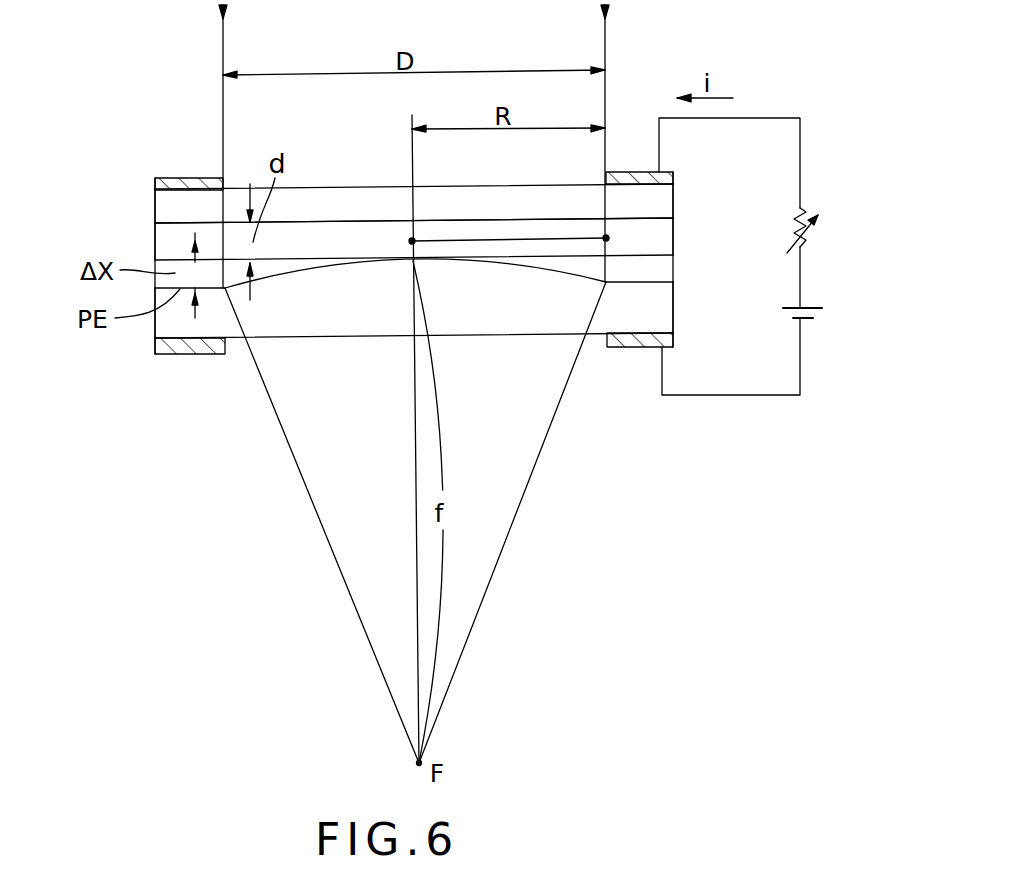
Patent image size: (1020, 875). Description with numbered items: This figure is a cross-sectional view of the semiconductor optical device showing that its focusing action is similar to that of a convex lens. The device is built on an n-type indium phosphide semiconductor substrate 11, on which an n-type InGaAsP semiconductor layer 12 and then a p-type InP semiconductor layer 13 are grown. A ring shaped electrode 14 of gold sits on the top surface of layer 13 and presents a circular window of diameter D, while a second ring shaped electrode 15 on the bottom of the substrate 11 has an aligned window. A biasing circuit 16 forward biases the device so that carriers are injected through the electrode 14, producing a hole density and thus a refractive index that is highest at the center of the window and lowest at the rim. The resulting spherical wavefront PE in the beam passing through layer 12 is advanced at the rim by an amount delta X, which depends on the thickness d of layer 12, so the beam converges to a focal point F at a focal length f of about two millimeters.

The semiconductor substrate 11 is at (665, 300).
The n-type semiconductor layer 12 is at (664, 237).
The p-type semiconductor layer 13 is at (665, 202).
The ring shaped electrode 14 is at (188, 183).
The ring shaped electrode 15 is at (185, 356).
The biasing circuit 16 is at (820, 198).